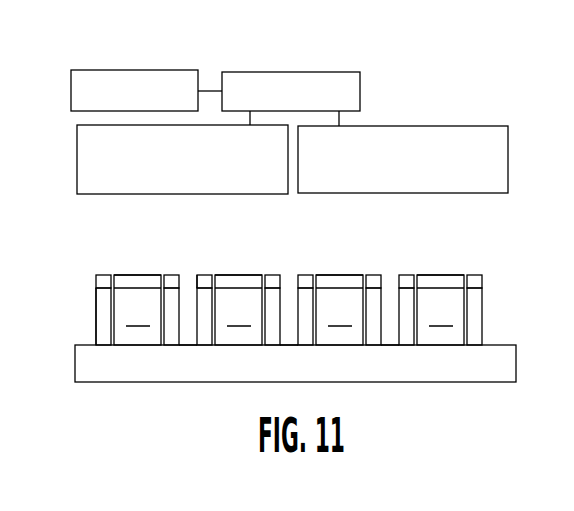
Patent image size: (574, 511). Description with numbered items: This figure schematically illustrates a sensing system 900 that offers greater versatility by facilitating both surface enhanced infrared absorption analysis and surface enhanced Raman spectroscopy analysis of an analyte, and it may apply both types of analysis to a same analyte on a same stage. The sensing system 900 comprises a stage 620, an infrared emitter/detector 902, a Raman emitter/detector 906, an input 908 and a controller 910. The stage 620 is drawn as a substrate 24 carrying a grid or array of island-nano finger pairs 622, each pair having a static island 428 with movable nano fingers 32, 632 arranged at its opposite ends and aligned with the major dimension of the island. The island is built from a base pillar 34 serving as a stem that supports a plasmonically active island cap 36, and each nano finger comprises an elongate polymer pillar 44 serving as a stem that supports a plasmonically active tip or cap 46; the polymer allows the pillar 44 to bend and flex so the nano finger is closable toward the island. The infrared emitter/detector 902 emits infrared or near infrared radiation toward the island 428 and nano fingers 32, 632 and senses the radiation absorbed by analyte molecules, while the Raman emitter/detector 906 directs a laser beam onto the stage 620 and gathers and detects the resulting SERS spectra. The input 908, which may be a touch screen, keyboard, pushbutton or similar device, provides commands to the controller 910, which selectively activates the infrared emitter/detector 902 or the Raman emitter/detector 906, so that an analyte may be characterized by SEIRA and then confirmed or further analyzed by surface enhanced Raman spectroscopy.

The sensing system 900 is at (497, 81).
The infrared emitter/detector 902 is at (77, 166).
The Raman emitter/detector 906 is at (508, 168).
The input 908 is at (140, 70).
The controller 910 is at (304, 72).
The stage 620 is at (518, 249).
The island-nano finger pair 622 is at (105, 254).
The nano finger 632 is at (85, 328).
The substrate 24 is at (500, 344).
The nano finger 32 is at (277, 276).
The base pillar 34 is at (289, 310).
The island cap 36 is at (138, 278).
The pillar 44 is at (100, 318).
The cap 46 is at (97, 282).
The island 428 is at (231, 259).